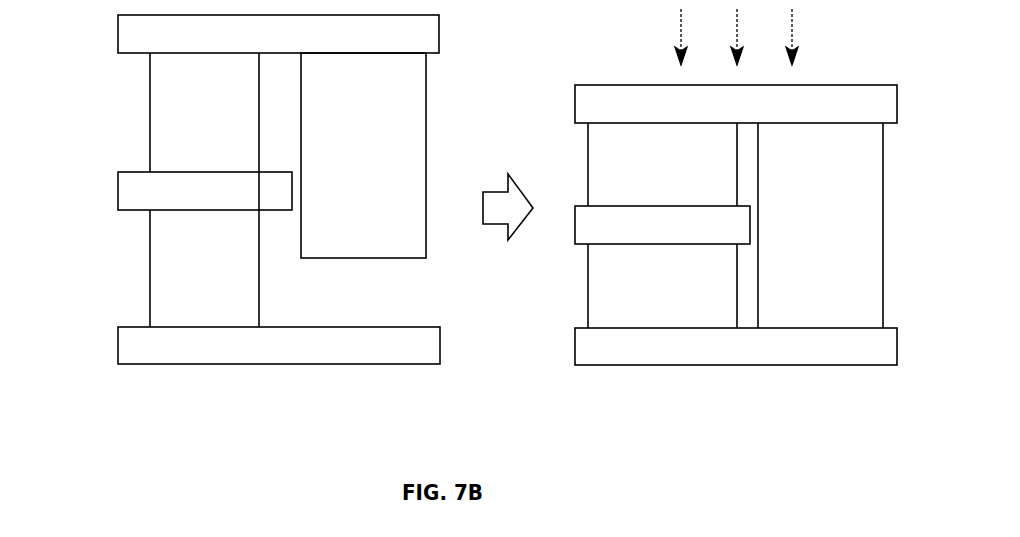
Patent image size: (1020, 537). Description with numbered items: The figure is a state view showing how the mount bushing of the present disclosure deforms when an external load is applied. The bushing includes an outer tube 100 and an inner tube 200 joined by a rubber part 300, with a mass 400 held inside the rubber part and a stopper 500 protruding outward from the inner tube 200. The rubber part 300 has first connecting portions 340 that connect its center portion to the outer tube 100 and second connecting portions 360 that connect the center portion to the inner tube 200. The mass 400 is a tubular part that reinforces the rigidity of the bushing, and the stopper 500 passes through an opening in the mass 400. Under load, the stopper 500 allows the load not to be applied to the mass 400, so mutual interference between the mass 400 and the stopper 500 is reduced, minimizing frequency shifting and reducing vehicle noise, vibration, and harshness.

The outer tube 100 is at (128, 36).
The inner tube 200 is at (128, 345).
The rubber part 300 is at (132, 190).
The first connecting portions 340 is at (165, 124).
The second connecting portions 360 is at (120, 268).
The mass 400 is at (280, 191).
The stopper 500 is at (415, 97).